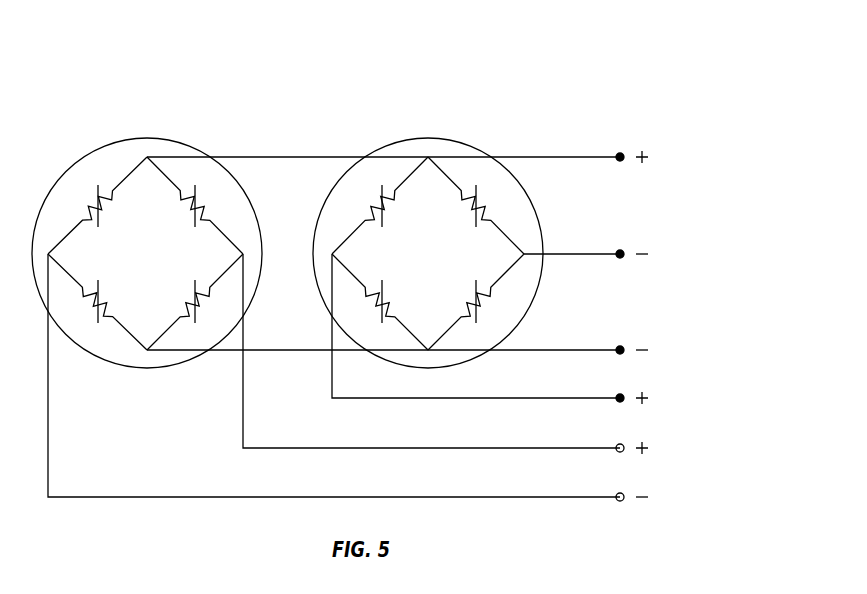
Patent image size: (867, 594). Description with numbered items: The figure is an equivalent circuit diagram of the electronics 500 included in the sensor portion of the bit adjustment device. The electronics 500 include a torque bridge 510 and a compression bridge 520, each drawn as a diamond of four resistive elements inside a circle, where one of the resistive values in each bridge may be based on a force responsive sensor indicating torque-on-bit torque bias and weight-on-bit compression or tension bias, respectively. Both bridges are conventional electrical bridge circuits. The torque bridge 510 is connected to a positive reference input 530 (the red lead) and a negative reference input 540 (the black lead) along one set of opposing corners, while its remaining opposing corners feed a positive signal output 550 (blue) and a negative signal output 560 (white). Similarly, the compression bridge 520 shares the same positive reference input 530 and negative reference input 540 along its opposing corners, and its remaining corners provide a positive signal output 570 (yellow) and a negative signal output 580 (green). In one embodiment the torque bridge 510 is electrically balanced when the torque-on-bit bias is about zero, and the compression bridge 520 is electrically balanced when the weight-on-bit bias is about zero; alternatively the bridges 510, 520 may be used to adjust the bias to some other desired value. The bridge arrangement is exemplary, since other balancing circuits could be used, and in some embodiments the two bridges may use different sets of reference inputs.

The electronics 500 is at (624, 46).
The torque bridge 510 is at (93, 150).
The compression bridge 520 is at (368, 150).
The positive reference input 530 is at (622, 152).
The negative reference input 540 is at (622, 345).
The positive signal output 550 is at (622, 444).
The negative signal output 560 is at (622, 493).
The positive signal output 570 is at (622, 394).
The negative signal output 580 is at (622, 249).